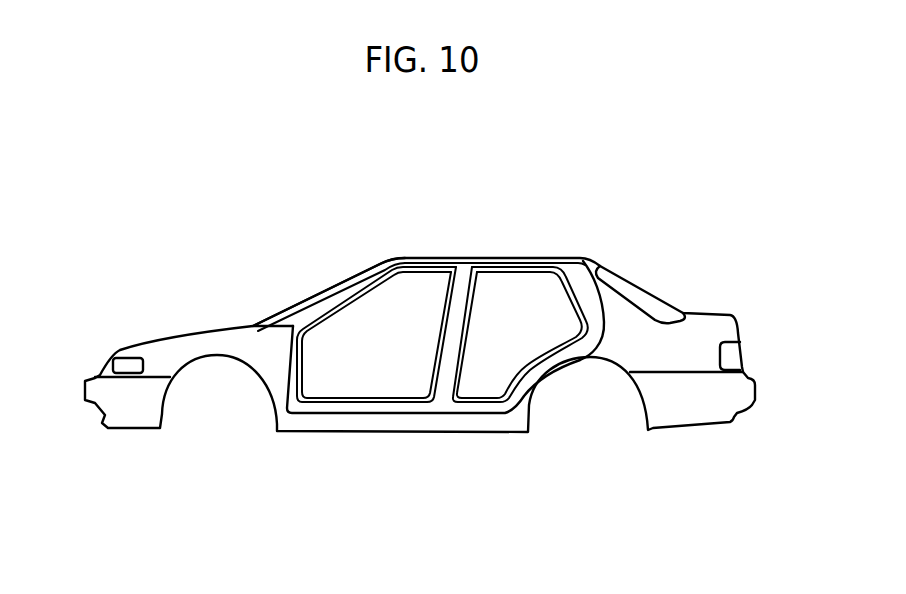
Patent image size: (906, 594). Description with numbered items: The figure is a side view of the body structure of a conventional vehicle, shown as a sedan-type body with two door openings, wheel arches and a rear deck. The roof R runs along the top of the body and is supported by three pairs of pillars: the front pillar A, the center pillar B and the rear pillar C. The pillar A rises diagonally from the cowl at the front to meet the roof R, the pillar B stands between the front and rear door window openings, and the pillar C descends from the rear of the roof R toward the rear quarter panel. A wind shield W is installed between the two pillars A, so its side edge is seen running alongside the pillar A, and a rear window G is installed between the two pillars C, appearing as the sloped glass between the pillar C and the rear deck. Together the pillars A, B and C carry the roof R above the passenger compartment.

The windshield (front window glass) W is at (300, 298).
The pillar A is at (369, 276).
The roof R is at (433, 257).
The pillar B is at (468, 266).
The pillar C is at (588, 280).
The rear window glass G is at (640, 290).